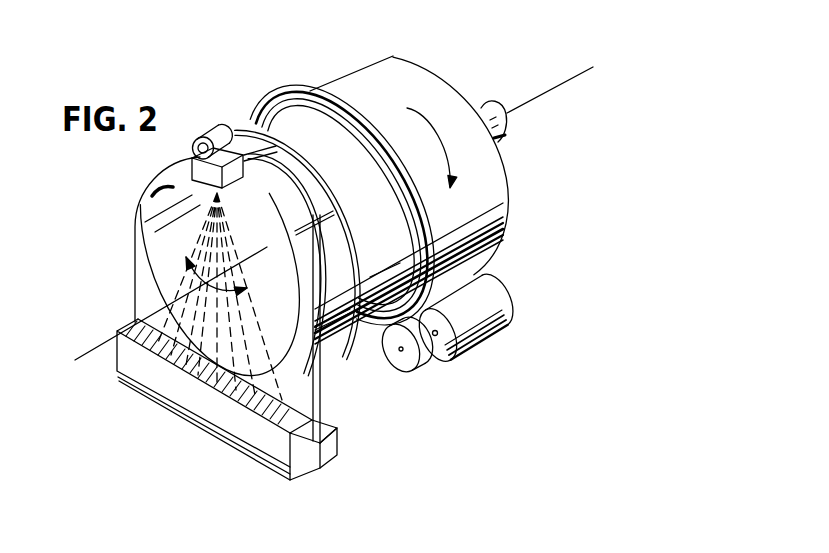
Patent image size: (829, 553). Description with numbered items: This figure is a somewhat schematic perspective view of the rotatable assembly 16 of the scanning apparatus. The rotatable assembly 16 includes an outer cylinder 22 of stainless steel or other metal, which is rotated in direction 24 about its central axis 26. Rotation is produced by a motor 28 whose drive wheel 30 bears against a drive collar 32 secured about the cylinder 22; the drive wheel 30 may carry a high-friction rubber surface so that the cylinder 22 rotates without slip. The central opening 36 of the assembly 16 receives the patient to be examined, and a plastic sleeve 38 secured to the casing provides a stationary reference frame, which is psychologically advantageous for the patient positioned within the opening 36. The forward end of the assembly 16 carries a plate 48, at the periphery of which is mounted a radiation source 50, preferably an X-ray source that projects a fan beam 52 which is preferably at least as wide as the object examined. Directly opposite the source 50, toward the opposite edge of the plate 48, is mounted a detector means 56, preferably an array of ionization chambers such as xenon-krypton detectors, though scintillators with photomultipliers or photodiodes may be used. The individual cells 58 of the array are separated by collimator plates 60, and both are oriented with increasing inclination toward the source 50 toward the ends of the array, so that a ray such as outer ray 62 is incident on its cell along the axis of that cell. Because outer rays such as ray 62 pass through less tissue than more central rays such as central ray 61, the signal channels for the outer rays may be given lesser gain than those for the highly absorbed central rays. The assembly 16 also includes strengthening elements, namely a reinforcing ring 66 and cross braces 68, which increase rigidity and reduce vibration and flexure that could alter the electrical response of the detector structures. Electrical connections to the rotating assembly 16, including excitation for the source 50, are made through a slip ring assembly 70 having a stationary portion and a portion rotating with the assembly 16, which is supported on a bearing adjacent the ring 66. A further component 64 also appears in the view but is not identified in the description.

The rotatable assembly 16 is at (348, 70).
The outer cylinder 22 is at (395, 77).
The direction of rotation 24 is at (440, 113).
The central axis 26 is at (567, 77).
The motor 28 is at (490, 330).
The drive wheel 30 is at (427, 373).
The drive collar 32 is at (308, 95).
The central opening 36 is at (168, 234).
The sleeve 38 is at (140, 211).
The plate 48 is at (321, 403).
The radiation source 50 is at (193, 142).
The fan beam 52 is at (170, 273).
The detector means 56 is at (167, 373).
The cells 58 is at (237, 382).
The collimator plates 60 is at (197, 387).
The central ray 61 is at (203, 290).
The outer ray 62 is at (262, 341).
The base block 64 is at (335, 450).
The reinforcing ring 66 is at (344, 236).
The cross braces 68 is at (277, 151).
The slip ring assembly 70 is at (515, 133).